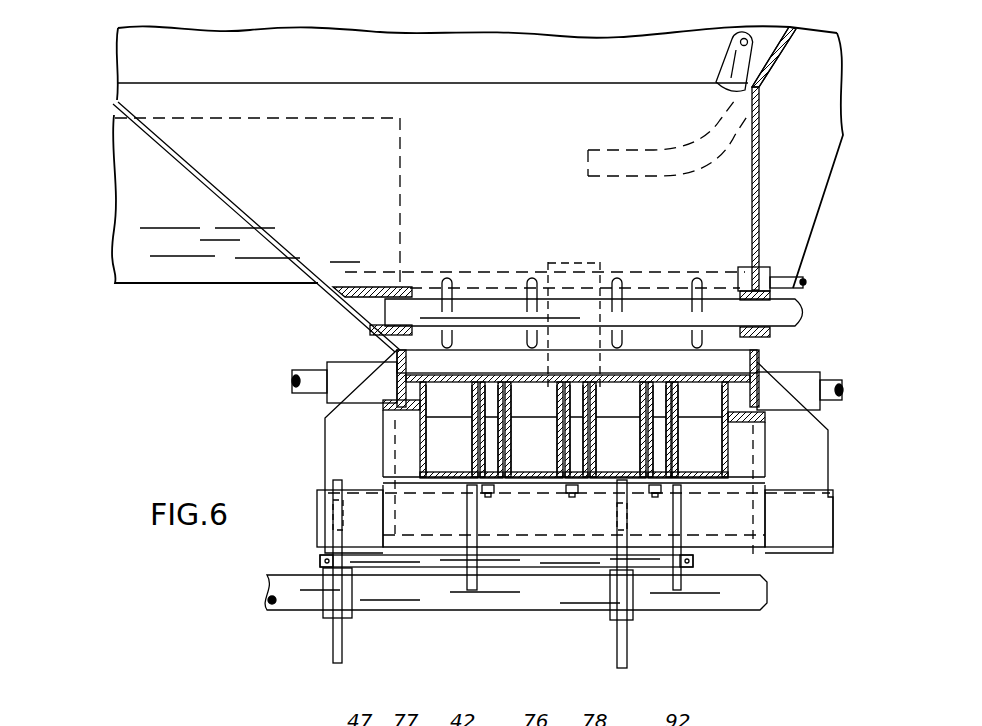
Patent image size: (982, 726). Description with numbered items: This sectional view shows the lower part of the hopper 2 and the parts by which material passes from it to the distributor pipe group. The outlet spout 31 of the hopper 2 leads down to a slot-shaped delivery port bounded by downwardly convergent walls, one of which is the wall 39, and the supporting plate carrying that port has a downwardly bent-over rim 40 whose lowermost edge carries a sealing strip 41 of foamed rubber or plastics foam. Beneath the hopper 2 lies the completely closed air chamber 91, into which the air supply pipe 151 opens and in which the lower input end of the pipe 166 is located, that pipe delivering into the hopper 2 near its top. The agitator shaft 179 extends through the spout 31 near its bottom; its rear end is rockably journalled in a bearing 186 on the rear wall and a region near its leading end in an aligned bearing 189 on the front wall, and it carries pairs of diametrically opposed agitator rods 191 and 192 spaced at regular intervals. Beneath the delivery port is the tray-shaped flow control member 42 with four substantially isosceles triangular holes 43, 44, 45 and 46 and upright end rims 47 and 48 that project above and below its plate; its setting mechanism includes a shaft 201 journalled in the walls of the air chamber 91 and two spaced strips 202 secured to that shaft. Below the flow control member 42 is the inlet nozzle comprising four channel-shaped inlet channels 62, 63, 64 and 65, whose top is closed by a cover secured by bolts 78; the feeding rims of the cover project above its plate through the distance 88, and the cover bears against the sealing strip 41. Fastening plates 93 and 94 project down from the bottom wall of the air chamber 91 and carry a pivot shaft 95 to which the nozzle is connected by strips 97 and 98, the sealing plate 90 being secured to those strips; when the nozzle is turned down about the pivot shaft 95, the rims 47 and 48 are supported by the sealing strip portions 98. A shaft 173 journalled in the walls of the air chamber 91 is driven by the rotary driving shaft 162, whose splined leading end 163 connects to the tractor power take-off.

The hopper 2 is at (382, 38).
The outlet spout 31 is at (456, 233).
The air chamber 91 is at (505, 98).
The air supply pipe 151 is at (338, 110).
The pipe 166 is at (725, 60).
The bearing 186 is at (362, 280).
The agitator shaft 179 is at (495, 298).
The strips 202 is at (602, 258).
The agitator rods 191 is at (628, 275).
The shaft 201 is at (718, 270).
The bearing 189 is at (785, 266).
The agitator rods 192 is at (690, 338).
The downwardly convergent wall 39 is at (505, 348).
The flow control member 42 is at (574, 370).
The hole 43 is at (462, 380).
The hole 44 is at (535, 380).
The hole 45 is at (630, 369).
The hole 46 is at (716, 382).
The upright rim 47 is at (390, 380).
The upright rim 48 is at (775, 378).
The shaft 173 is at (290, 384).
The bent-over rim 40 is at (579, 451).
The sealing strip 41 is at (760, 416).
The strip 98 is at (395, 432).
The distance 88 is at (530, 405).
The inlet channel 62 is at (440, 440).
The inlet channel 63 is at (556, 448).
The inlet channel 64 is at (612, 450).
The inlet channel 65 is at (694, 452).
The sealing plate 90 is at (400, 512).
The strip 97 is at (682, 518).
The bolt 78 is at (492, 498).
The pivot shaft 95 is at (320, 558).
The fastening plate 93 is at (333, 645).
The fastening plate 94 is at (617, 648).
The rotary driving shaft 162 is at (420, 600).
The leading end 163 is at (745, 600).